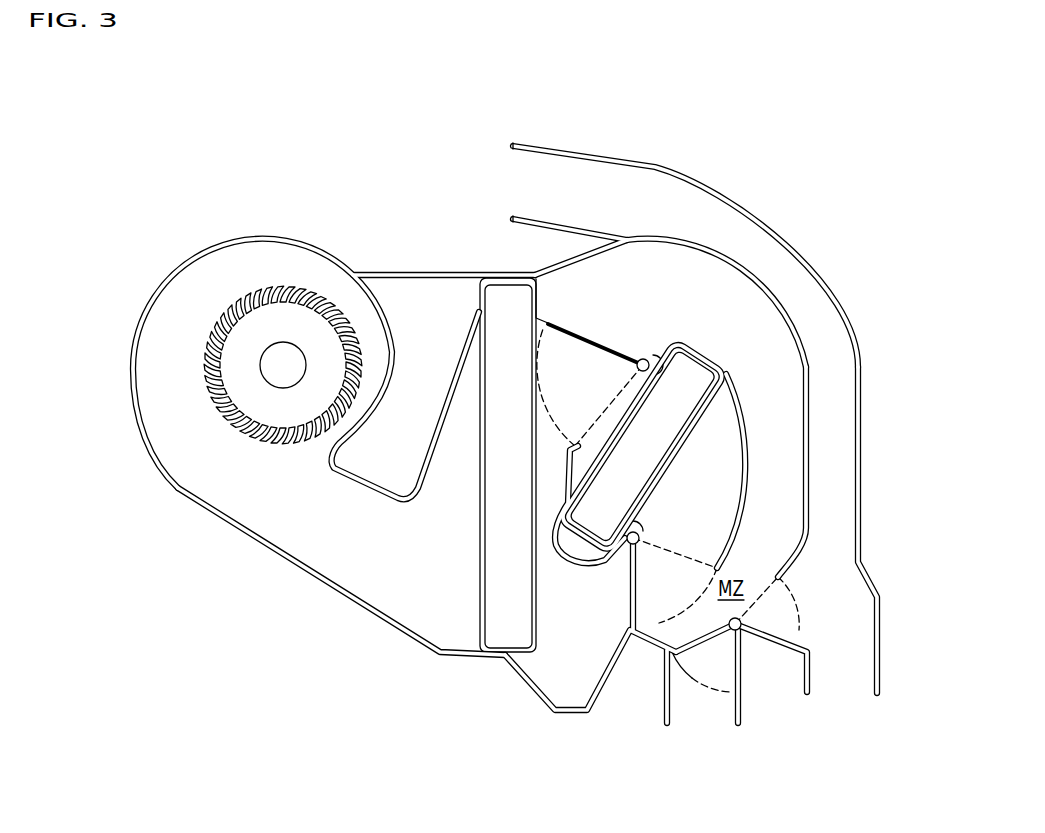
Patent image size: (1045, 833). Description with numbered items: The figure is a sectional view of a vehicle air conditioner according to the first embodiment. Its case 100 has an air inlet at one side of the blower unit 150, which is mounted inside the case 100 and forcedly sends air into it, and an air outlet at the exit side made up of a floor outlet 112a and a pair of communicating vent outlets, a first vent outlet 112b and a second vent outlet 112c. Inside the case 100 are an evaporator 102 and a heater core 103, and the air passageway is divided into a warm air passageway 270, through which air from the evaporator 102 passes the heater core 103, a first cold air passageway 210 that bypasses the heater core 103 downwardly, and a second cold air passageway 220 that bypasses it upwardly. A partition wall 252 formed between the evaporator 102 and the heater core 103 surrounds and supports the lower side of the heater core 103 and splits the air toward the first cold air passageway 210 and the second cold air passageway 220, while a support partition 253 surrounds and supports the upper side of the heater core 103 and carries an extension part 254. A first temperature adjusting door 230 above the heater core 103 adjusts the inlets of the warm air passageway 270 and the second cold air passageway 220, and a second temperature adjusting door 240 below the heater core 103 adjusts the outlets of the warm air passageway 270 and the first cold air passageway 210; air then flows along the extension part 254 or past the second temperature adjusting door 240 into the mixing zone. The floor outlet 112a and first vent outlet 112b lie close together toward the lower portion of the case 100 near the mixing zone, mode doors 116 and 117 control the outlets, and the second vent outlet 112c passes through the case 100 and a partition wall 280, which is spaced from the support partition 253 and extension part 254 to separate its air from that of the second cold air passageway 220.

The case 100 is at (328, 583).
The evaporator 102 is at (425, 642).
The heater core 103 is at (705, 347).
The floor outlet 112a is at (710, 702).
The first vent outlet 112b is at (850, 660).
The second vent outlet 112c is at (548, 182).
The mode door 116 is at (745, 630).
The mode door 117 is at (668, 684).
The blower unit 150 is at (250, 432).
The first cold air passageway 210 is at (574, 606).
The second cold air passageway 220 is at (625, 304).
The first temperature adjusting door 230 is at (592, 340).
The second temperature adjusting door 240 is at (628, 633).
The partition wall 252 is at (497, 572).
The support partition 253 is at (734, 372).
The extension part 254 is at (752, 465).
The warm air passageway 270 is at (704, 514).
The partition wall 280 is at (805, 355).